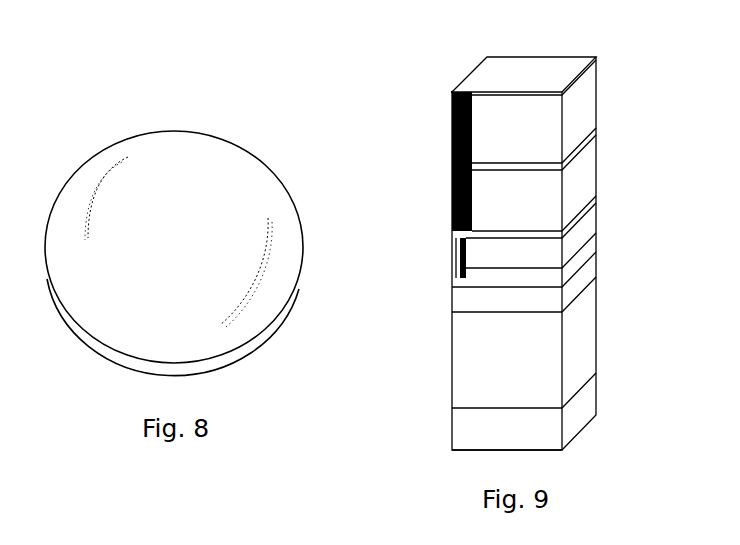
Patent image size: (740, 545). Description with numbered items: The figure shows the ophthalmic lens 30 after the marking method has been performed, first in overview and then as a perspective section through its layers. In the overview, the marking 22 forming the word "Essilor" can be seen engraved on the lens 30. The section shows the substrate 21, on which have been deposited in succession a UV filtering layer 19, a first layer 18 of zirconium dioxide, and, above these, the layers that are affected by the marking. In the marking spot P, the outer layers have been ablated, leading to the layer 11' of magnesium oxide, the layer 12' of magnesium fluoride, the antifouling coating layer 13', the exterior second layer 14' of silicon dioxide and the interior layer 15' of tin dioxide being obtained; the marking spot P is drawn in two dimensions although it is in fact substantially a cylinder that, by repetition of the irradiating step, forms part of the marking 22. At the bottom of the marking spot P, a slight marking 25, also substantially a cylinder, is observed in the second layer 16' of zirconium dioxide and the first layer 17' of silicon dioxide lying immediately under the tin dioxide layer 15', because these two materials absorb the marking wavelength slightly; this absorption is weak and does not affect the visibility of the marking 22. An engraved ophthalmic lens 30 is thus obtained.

In FIG. 8, the ophthalmic lens 30 is at (249, 131).
In FIG. 9, the ophthalmic lens 30 is at (601, 52).
In FIG. 8, the marking 22 is at (140, 157).
In FIG. 9, the marking 22 is at (452, 128).
In FIG. 9, the layer of MgO after ablation 11' is at (513, 69).
In FIG. 9, the layer of MgF2 after ablation 12' is at (560, 123).
In FIG. 9, the antifouling coating layer after ablation 13' is at (561, 144).
In FIG. 9, the exterior second layer of SiO2 after ablation 14' is at (561, 191).
In FIG. 9, the interior layer of SnO2 after ablation 15' is at (559, 212).
In FIG. 9, the second layer of ZrO2 after marking 16' is at (559, 241).
In FIG. 9, the first layer of SiO2 after marking 17' is at (499, 275).
In FIG. 9, the first layer of ZrO2 18 is at (458, 305).
In FIG. 9, the UV filtering layer 19 is at (458, 365).
In FIG. 9, the substrate 21 is at (457, 432).
In FIG. 9, the slight marking 25 is at (458, 242).
In FIG. 9, the marking spot P is at (452, 92).